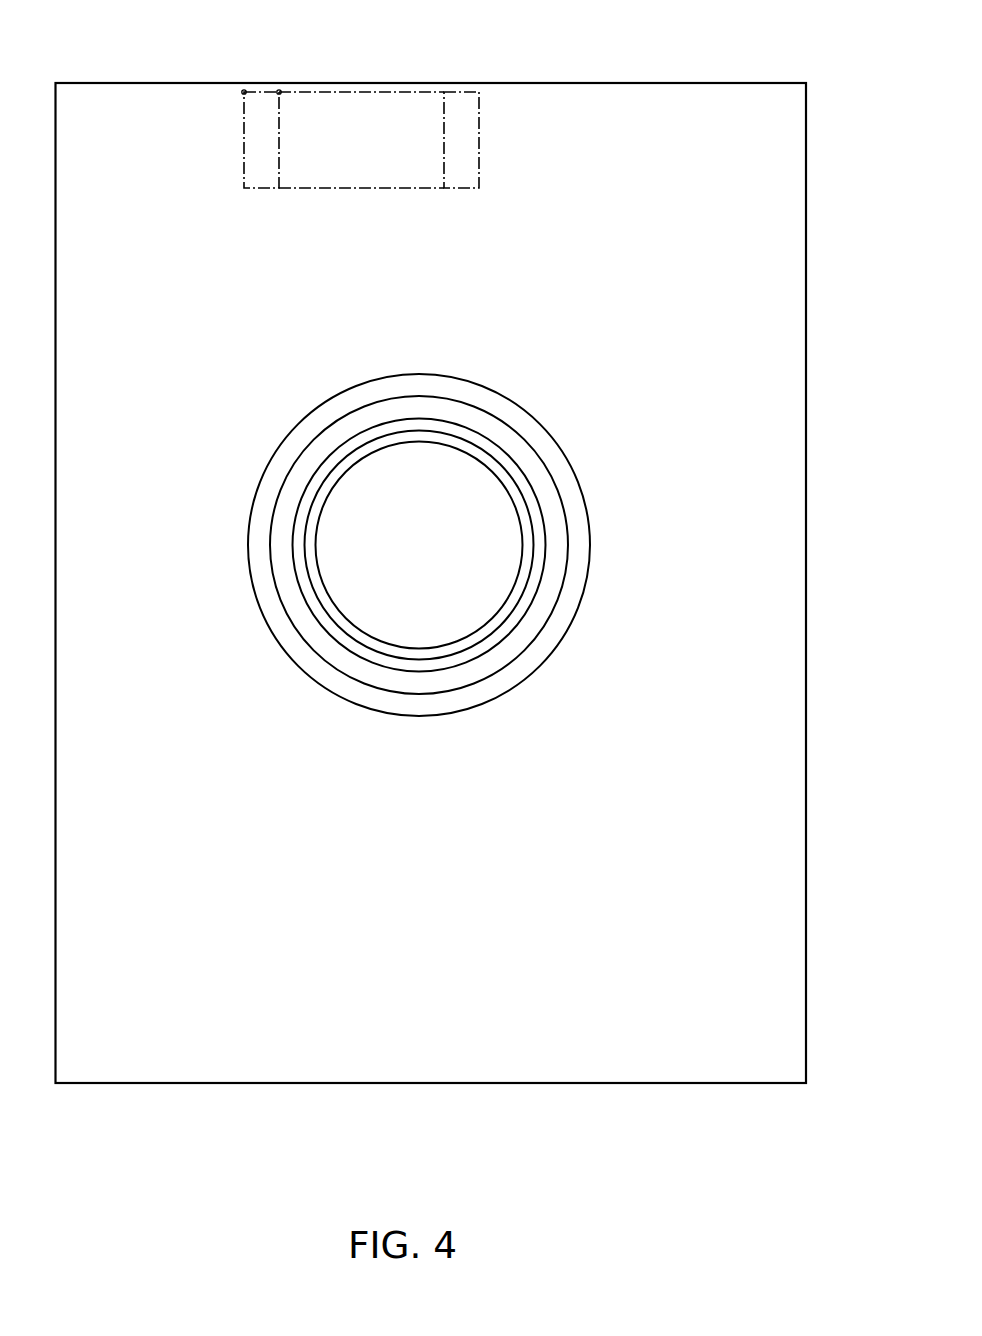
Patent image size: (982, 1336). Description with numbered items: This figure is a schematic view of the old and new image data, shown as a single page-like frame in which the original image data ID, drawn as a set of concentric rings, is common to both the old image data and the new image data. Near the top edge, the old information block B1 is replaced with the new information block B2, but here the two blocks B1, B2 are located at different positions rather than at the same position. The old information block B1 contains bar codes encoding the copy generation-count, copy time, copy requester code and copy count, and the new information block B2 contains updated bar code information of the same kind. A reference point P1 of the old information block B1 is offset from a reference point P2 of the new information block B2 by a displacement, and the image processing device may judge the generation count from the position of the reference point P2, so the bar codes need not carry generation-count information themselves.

The original image data ID is at (518, 400).
The old information block B1 is at (255, 92).
The new information block B2 is at (466, 91).
The reference point of the old information block P1 is at (243, 90).
The reference point of the new information block P2 is at (280, 90).